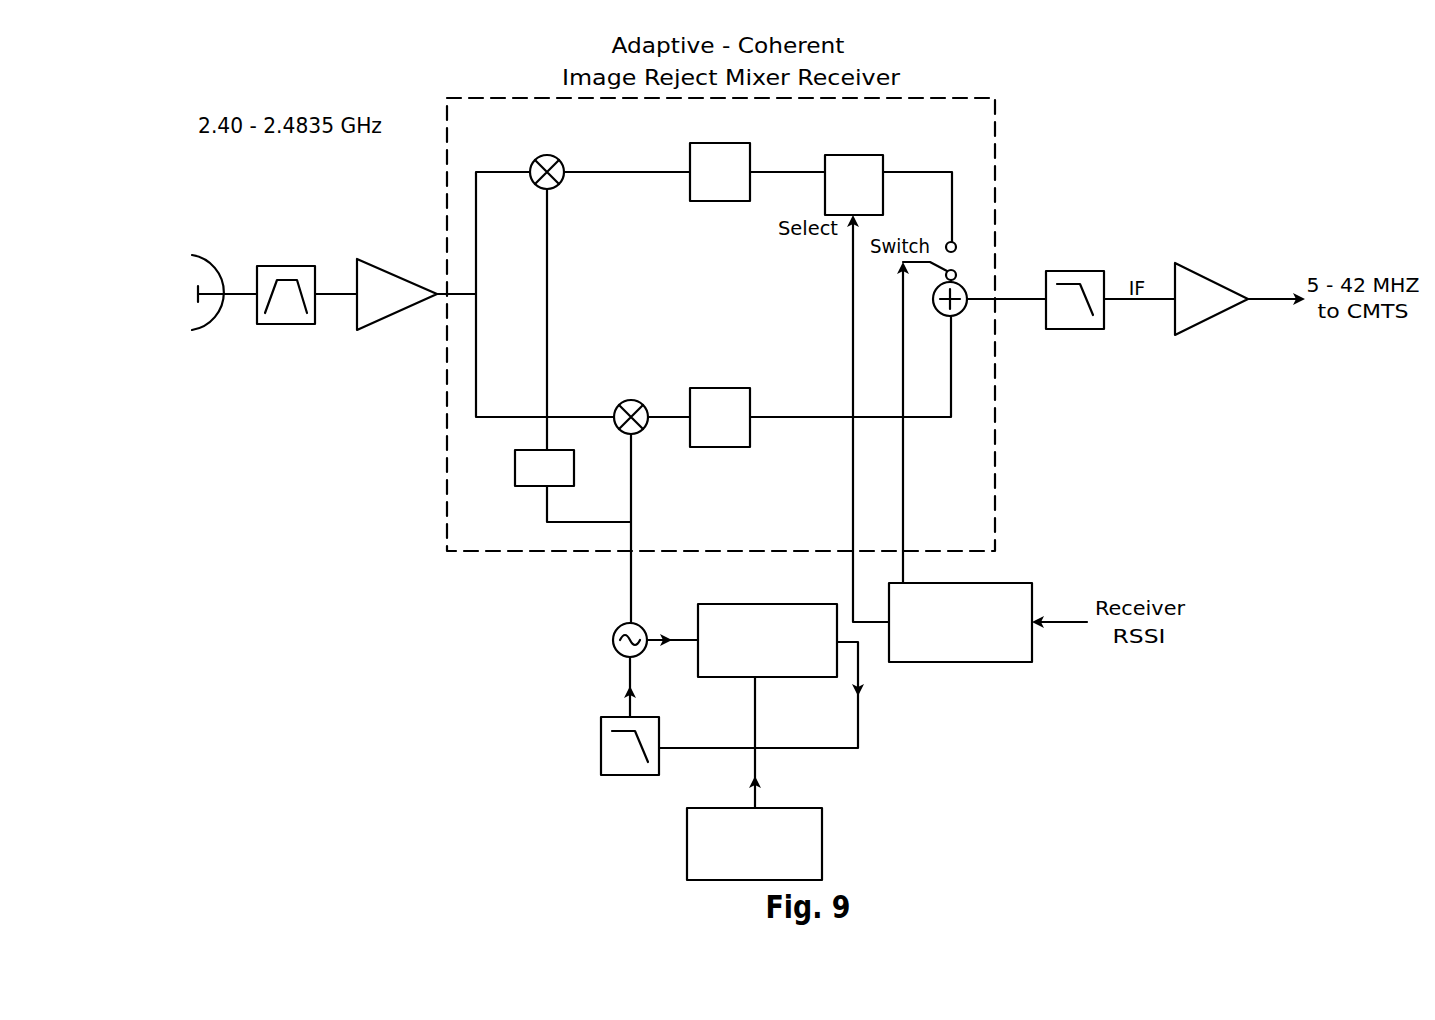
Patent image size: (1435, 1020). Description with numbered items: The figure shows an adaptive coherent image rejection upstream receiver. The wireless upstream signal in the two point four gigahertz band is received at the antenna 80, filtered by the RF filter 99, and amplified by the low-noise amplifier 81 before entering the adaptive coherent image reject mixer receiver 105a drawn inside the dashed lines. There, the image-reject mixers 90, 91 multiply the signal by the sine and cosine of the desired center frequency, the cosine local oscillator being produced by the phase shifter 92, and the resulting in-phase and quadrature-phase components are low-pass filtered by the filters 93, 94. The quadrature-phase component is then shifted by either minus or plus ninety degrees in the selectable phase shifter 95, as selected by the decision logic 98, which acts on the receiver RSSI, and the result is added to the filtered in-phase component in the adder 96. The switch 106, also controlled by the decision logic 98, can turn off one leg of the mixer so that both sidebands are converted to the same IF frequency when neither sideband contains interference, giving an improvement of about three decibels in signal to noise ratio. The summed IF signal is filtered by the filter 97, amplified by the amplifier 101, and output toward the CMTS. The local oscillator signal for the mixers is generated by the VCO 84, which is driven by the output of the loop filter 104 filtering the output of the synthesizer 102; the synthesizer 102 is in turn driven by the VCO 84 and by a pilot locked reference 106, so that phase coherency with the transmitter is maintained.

The antenna 80 is at (199, 252).
The RF filter 99 is at (300, 266).
The low-noise amplifier 81 is at (381, 269).
The adaptive coherent image reject mixer receiver 105a is at (944, 98).
The image-reject mixer 90 is at (557, 155).
The image-reject mixer 91 is at (622, 403).
The -90° phase shifter 92 is at (560, 450).
The low-pass filter 93 is at (718, 201).
The low-pass filter 94 is at (725, 447).
The selectable phase shifter 95 is at (861, 155).
The switch / pilot locked reference 106 is at (953, 262).
The adder 96 is at (948, 316).
The filter 97 is at (1080, 271).
The amplifier 101 is at (1203, 277).
The VCO 84 is at (641, 624).
The synthesizer 102 is at (770, 604).
The decision logic 98 is at (1005, 583).
The loop filter 104 is at (645, 717).